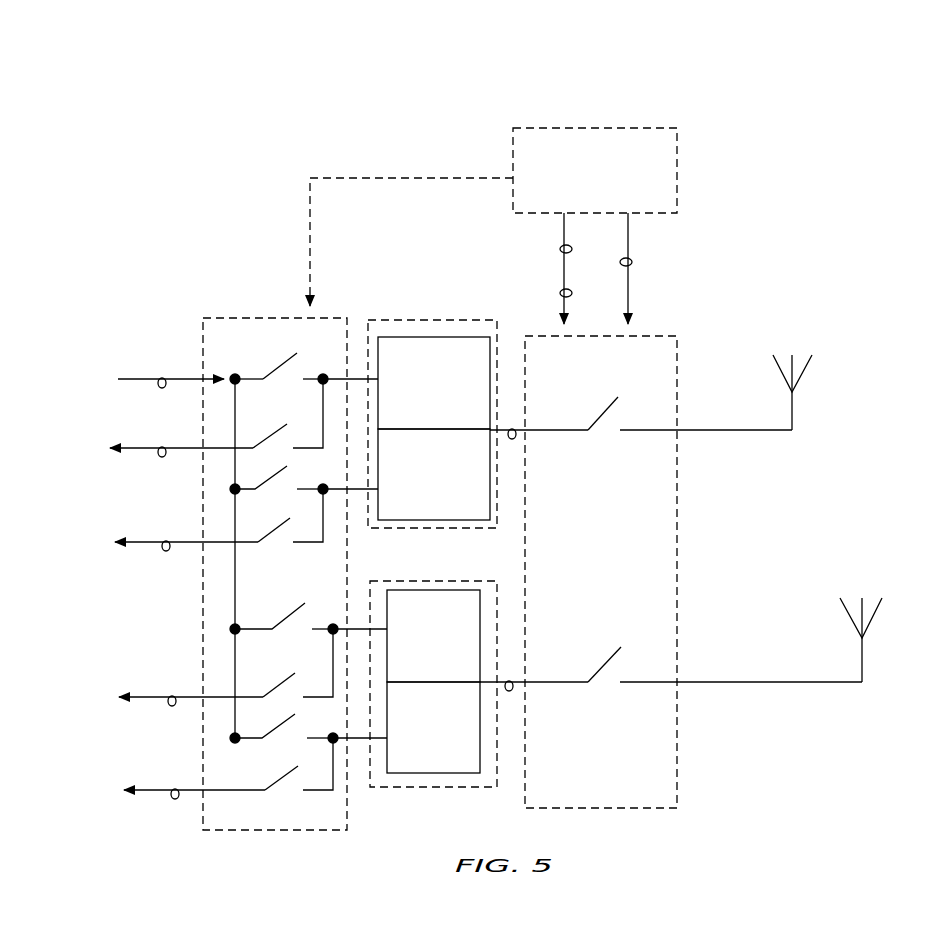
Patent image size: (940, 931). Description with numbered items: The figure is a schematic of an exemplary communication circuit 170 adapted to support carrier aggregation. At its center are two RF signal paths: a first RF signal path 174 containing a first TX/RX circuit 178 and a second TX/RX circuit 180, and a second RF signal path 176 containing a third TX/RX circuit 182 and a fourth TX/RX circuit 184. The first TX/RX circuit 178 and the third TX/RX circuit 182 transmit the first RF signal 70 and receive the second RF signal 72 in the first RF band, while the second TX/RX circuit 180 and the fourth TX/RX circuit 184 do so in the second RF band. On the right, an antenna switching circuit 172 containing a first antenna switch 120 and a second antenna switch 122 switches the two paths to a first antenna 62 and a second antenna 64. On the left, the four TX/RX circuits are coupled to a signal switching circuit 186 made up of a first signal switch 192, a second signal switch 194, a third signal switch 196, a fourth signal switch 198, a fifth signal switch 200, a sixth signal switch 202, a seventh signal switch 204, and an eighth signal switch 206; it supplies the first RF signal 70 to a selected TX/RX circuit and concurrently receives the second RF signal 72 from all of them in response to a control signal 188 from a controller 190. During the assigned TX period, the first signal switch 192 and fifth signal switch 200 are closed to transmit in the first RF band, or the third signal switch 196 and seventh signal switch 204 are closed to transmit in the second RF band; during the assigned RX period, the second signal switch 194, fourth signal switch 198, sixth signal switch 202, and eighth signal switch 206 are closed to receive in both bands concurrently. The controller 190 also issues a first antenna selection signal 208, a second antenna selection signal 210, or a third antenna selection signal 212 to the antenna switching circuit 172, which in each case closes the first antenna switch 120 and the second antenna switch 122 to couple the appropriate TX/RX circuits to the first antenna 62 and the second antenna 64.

The communication circuit 170 is at (796, 130).
The controller 190 is at (583, 128).
The control signal 188 is at (371, 178).
The signal switching circuit 186 is at (258, 318).
The first RF signal path 174 is at (378, 320).
The second RF signal path 176 is at (400, 581).
The first TX/RX circuit 178 is at (437, 337).
The second TX/RX circuit 180 is at (443, 520).
The third TX/RX circuit 182 is at (447, 590).
The fourth TX/RX circuit 184 is at (463, 773).
The antenna switching circuit 172 is at (677, 365).
The first antenna switch 120 is at (597, 408).
The second antenna switch 122 is at (606, 692).
The first antenna 62 is at (803, 375).
The second antenna 64 is at (872, 622).
The first RF signal 70 is at (160, 378).
The second RF signal 72 is at (160, 447).
The first signal switch 192 is at (259, 356).
The second signal switch 194 is at (283, 448).
The third signal switch 196 is at (282, 491).
The fourth signal switch 198 is at (285, 548).
The fifth signal switch 200 is at (296, 639).
The sixth signal switch 202 is at (292, 697).
The seventh signal switch 204 is at (291, 742).
The eighth signal switch 206 is at (293, 794).
The first antenna selection signal 208 is at (560, 252).
The second antenna selection signal 210 is at (560, 296).
The third antenna selection signal 212 is at (632, 262).